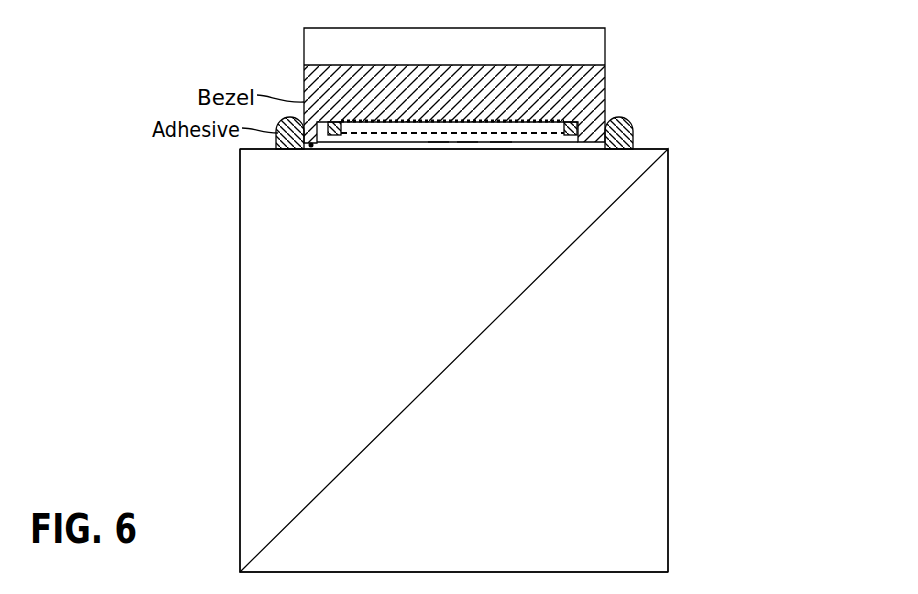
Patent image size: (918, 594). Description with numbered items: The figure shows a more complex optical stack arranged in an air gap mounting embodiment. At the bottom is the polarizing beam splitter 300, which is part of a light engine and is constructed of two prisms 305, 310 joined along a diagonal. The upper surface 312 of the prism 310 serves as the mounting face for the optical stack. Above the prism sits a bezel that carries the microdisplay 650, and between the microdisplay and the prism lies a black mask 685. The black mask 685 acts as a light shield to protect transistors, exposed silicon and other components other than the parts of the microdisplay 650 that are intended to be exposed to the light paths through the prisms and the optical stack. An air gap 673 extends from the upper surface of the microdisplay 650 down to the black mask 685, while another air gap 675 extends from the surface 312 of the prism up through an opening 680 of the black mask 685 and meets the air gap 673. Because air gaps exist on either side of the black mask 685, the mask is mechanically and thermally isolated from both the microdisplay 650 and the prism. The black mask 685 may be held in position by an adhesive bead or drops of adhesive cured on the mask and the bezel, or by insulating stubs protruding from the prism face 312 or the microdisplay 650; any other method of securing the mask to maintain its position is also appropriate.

The Polarizing Beam Splitter 300 is at (226, 404).
The prism 305 is at (606, 545).
The prism 310 is at (296, 466).
The upper surface of prism 312 is at (252, 150).
The microdisplay 650 is at (500, 134).
The air gap 673 is at (366, 129).
The air gap 675 is at (438, 134).
The opening of black mask 680 is at (550, 134).
The black mask 685 is at (467, 134).